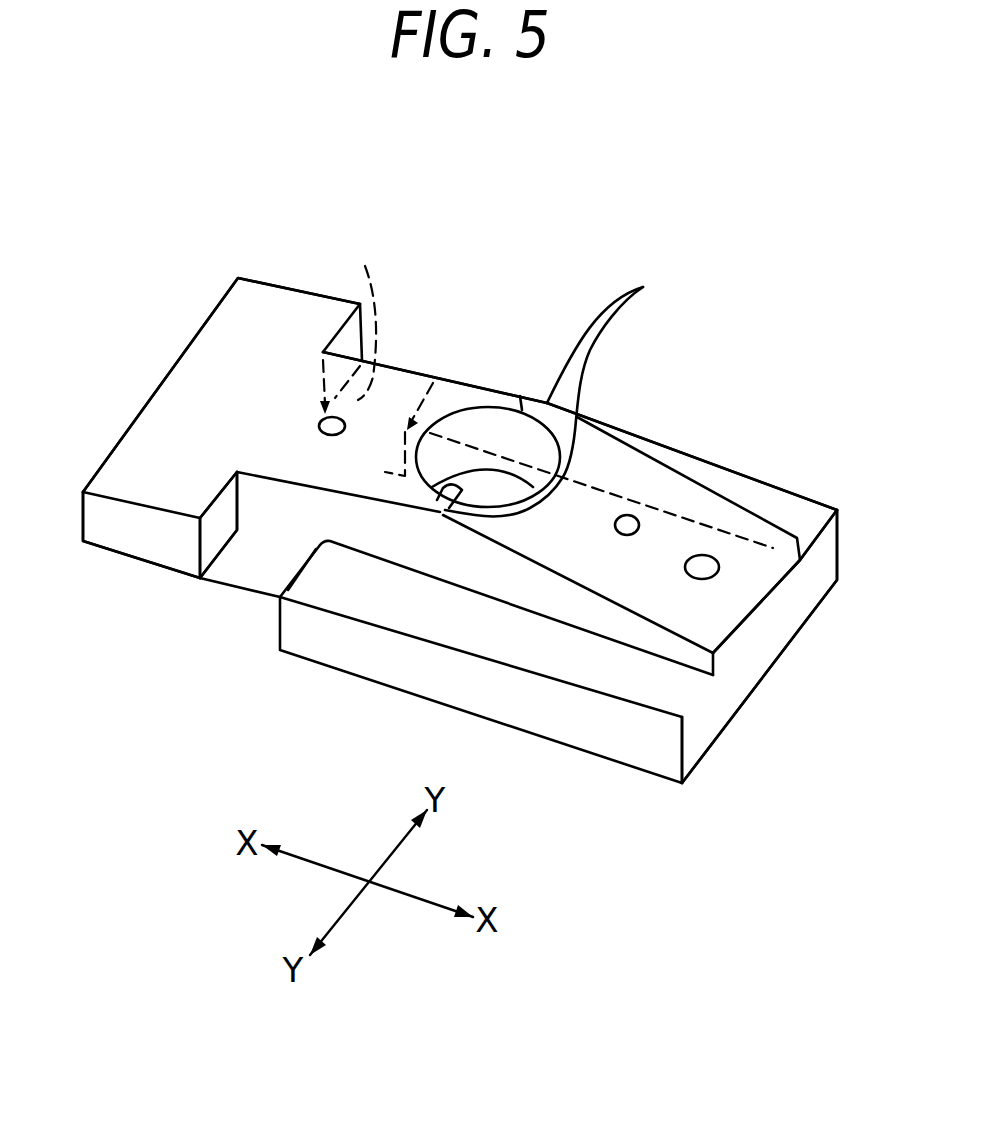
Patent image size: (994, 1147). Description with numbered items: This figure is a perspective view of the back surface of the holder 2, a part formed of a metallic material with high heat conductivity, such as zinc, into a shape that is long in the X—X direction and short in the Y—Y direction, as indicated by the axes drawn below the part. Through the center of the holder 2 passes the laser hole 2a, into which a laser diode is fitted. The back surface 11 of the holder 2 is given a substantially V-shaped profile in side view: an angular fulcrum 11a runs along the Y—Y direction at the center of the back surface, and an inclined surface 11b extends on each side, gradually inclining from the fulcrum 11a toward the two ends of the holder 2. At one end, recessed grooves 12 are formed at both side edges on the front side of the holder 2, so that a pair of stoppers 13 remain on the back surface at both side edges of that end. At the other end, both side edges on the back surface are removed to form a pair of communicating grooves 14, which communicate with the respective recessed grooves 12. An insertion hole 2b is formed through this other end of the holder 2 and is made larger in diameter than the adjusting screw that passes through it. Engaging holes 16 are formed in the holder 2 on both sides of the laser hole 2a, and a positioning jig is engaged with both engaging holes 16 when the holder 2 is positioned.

The holder 2 is at (178, 346).
The laser hole 2a is at (437, 498).
The insertion hole 2b is at (715, 570).
The back surface 11 is at (760, 250).
The fulcrum 11a is at (557, 384).
The inclined surface 11b is at (388, 400).
The recessed groove 12 is at (233, 622).
The stopper 13 is at (290, 296).
The communicating groove 14 is at (805, 507).
The engaging hole 16 is at (320, 425).